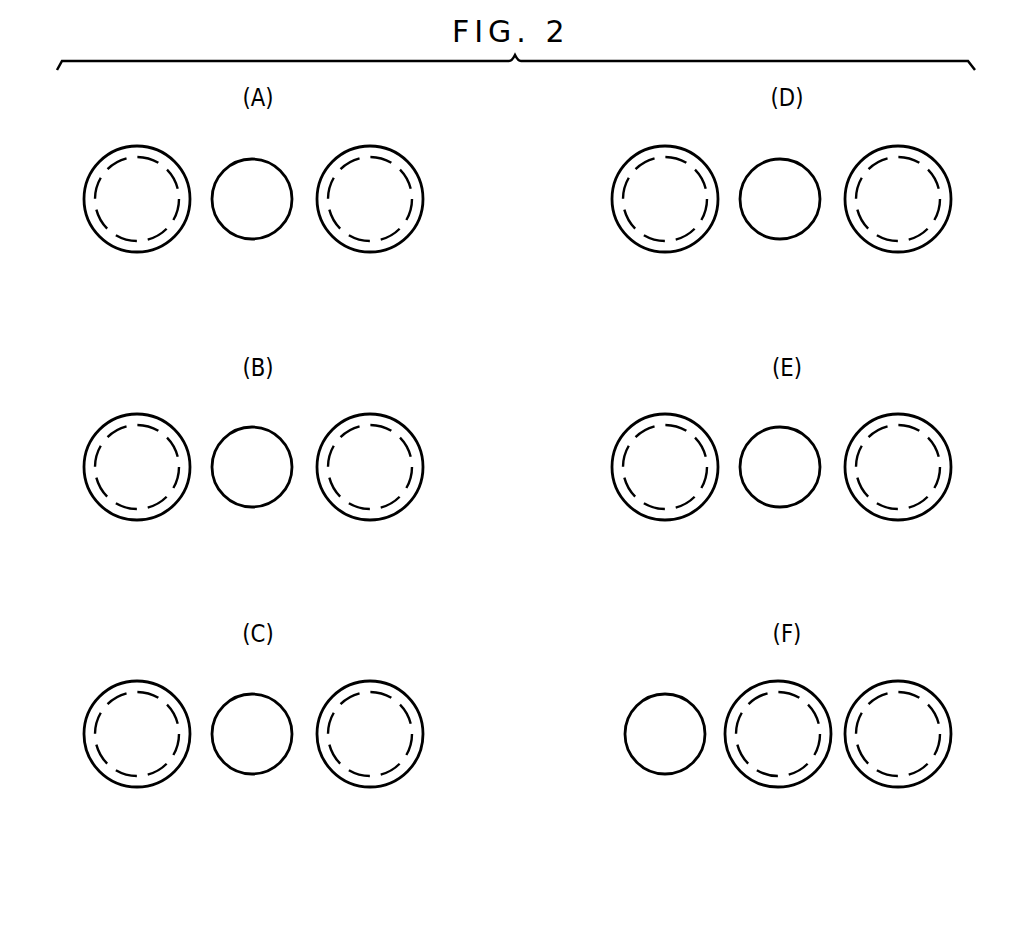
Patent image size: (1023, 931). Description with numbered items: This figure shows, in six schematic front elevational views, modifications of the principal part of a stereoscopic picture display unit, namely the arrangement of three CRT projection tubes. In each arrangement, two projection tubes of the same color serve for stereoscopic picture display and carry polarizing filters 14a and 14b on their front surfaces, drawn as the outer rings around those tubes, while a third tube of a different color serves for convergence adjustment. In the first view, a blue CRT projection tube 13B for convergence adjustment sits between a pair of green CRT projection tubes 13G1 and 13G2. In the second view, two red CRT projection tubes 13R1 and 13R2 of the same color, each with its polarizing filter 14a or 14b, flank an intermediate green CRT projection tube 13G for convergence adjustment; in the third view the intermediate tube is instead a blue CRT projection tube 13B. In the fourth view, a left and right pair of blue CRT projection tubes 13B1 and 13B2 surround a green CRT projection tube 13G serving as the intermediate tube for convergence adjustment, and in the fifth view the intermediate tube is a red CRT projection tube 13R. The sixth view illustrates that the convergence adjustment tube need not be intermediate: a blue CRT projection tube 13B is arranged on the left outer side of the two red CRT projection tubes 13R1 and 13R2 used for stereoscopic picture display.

The green CRT projection tube 13G1 is at (134, 241).
The green CRT projection tube 13G2 is at (360, 242).
The red CRT projection tube 13R1 is at (134, 509).
The red CRT projection tube 13R2 is at (360, 510).
The blue CRT projection tube 13B1 is at (662, 241).
The blue CRT projection tube 13B2 is at (888, 242).
The blue CRT projection tube 13B is at (247, 240).
The green CRT projection tube 13G is at (247, 508).
The red CRT projection tube 13R is at (775, 508).
The polarizing filter 14a is at (98, 240).
The polarizing filter 14b is at (403, 242).